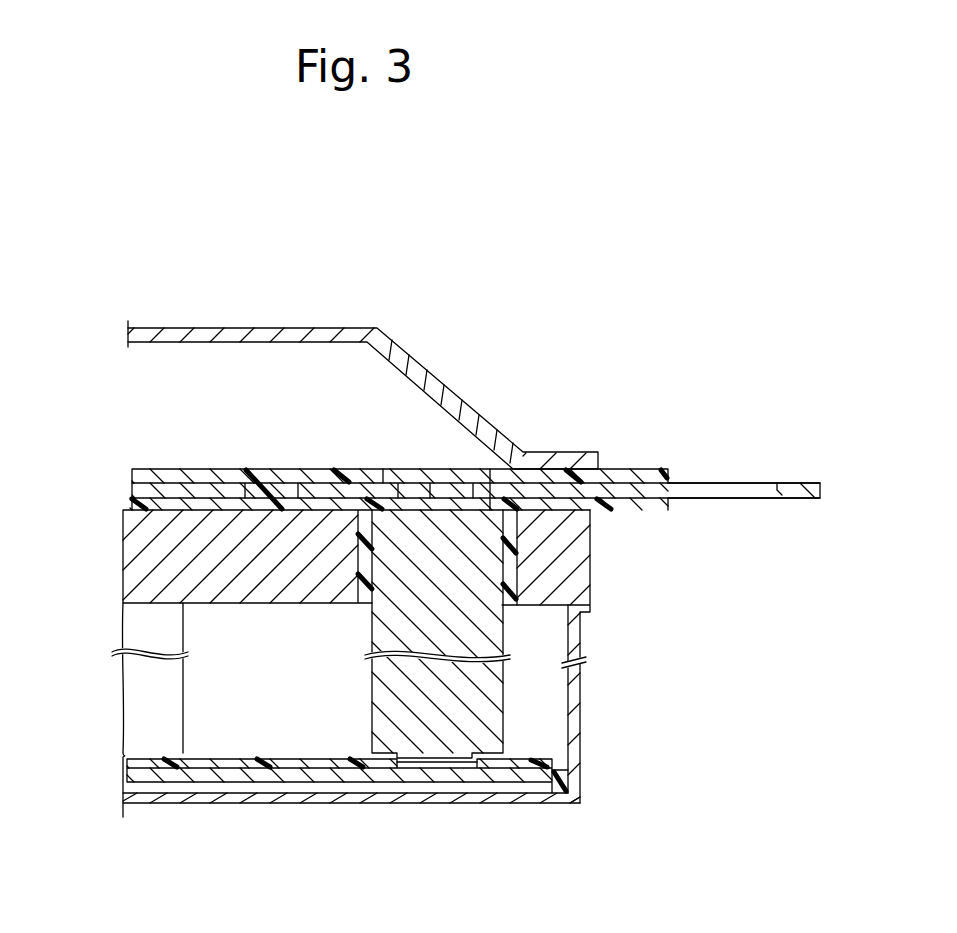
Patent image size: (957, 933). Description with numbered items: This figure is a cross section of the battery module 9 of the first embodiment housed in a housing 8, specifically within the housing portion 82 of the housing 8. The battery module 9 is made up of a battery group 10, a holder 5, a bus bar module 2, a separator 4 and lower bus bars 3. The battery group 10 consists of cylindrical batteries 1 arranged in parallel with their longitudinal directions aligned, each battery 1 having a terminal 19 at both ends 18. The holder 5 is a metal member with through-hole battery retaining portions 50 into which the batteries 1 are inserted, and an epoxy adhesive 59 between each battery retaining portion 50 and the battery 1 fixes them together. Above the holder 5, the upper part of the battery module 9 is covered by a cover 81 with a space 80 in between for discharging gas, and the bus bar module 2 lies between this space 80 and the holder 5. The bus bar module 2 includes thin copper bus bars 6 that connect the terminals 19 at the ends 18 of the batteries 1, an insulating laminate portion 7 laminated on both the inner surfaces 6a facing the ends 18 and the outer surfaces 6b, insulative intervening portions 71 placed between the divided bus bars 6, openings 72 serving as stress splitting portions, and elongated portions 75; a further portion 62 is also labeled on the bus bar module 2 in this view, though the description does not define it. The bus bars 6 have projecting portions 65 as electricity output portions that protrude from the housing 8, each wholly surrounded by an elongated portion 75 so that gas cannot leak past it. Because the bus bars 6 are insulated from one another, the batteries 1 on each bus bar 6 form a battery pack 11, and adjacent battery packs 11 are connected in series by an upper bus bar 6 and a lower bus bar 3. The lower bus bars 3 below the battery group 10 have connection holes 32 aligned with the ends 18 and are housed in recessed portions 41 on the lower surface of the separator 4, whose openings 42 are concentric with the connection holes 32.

The battery 1 is at (480, 633).
The bus bar module 2 is at (699, 511).
The lower bus bar 3 is at (350, 775).
The separator 4 is at (550, 760).
The holder 5 is at (573, 593).
The bus bar 6 is at (335, 487).
The inner surface 6a is at (155, 497).
The outer surface 6b is at (153, 475).
The insulating laminate portion 7 is at (200, 477).
The housing 8 is at (557, 797).
The battery module 9 is at (114, 644).
The battery group 10 is at (512, 687).
The battery pack 11 is at (372, 712).
The end 18 is at (430, 497).
The terminal 19 is at (450, 495).
The connection hole 32 is at (483, 777).
The recessed portion 41 is at (550, 775).
The opening 42 is at (430, 763).
The battery retaining portion 50 is at (505, 500).
The adhesive 59 is at (515, 548).
The electrode layer 62 is at (418, 508).
The projecting portion 65 is at (698, 495).
The insulative intervening portion 71 is at (273, 497).
The opening 72 is at (393, 472).
The elongated portion 75 is at (637, 477).
The space 80 is at (148, 367).
The cover 81 is at (207, 328).
The housing portion 82 is at (560, 710).